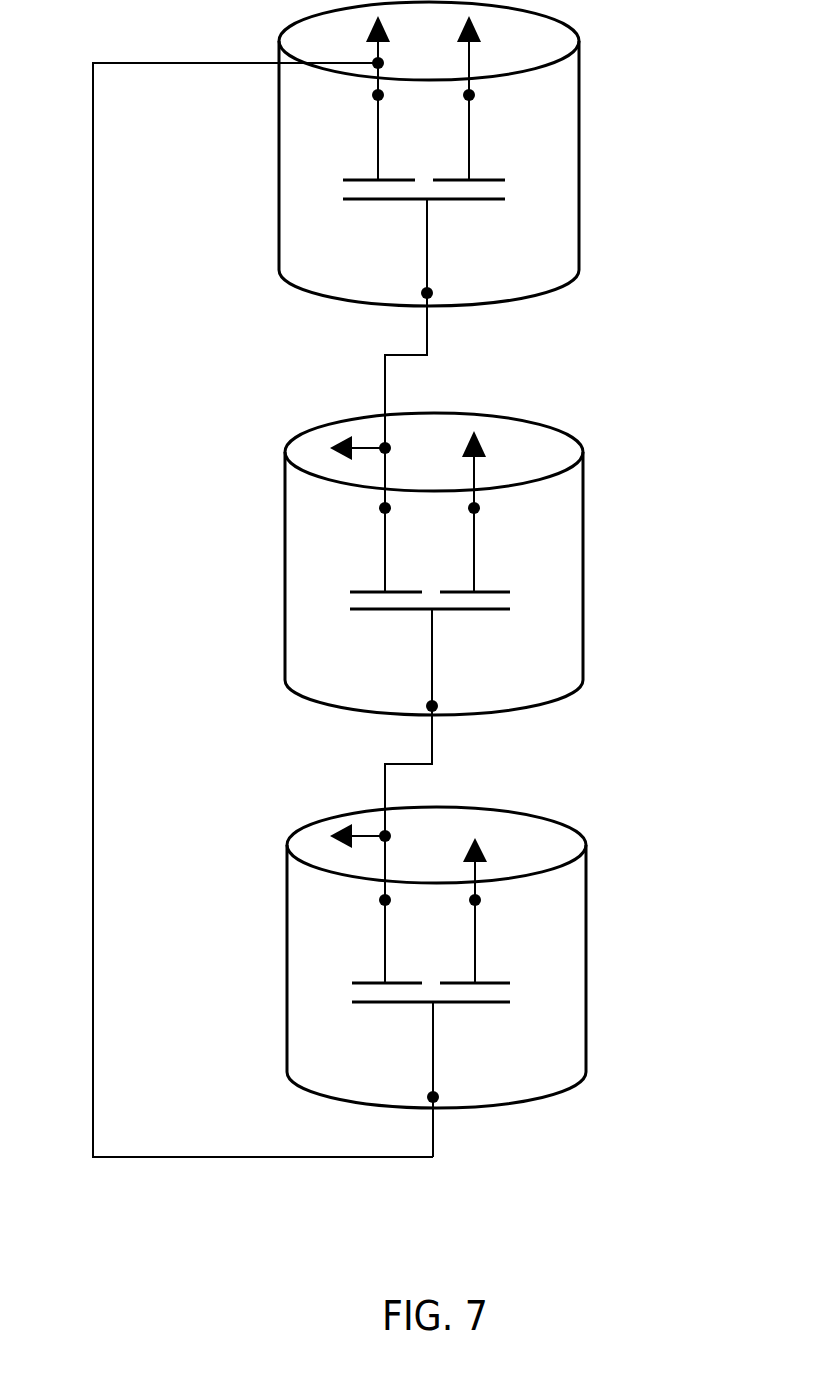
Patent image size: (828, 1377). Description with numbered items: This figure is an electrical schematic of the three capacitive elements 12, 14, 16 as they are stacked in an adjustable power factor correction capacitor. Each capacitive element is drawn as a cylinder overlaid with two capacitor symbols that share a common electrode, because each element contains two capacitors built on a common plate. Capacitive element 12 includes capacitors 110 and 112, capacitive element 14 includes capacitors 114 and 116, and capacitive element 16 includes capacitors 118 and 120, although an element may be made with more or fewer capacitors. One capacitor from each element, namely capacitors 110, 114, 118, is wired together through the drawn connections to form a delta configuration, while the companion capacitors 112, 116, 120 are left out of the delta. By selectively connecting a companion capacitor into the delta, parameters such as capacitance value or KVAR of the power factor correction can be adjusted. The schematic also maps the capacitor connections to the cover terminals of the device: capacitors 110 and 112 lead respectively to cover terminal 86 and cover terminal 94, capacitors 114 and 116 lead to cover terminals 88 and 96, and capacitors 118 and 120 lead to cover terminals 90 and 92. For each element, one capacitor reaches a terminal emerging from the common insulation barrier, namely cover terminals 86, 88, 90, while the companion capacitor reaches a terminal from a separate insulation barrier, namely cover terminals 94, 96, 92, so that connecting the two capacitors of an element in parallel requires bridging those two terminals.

The capacitive element 12 is at (578, 140).
The capacitive element 14 is at (584, 540).
The capacitive element 16 is at (586, 928).
The cover terminal 86 is at (393, 25).
The cover terminal 88 is at (341, 451).
The cover terminal 90 is at (343, 845).
The cover terminal 92 is at (481, 836).
The cover terminal 94 is at (486, 25).
The cover terminal 96 is at (491, 440).
The capacitor 110 is at (358, 153).
The capacitor 112 is at (495, 152).
The capacitor 114 is at (359, 555).
The capacitor 116 is at (500, 556).
The capacitor 118 is at (360, 959).
The capacitor 120 is at (501, 958).